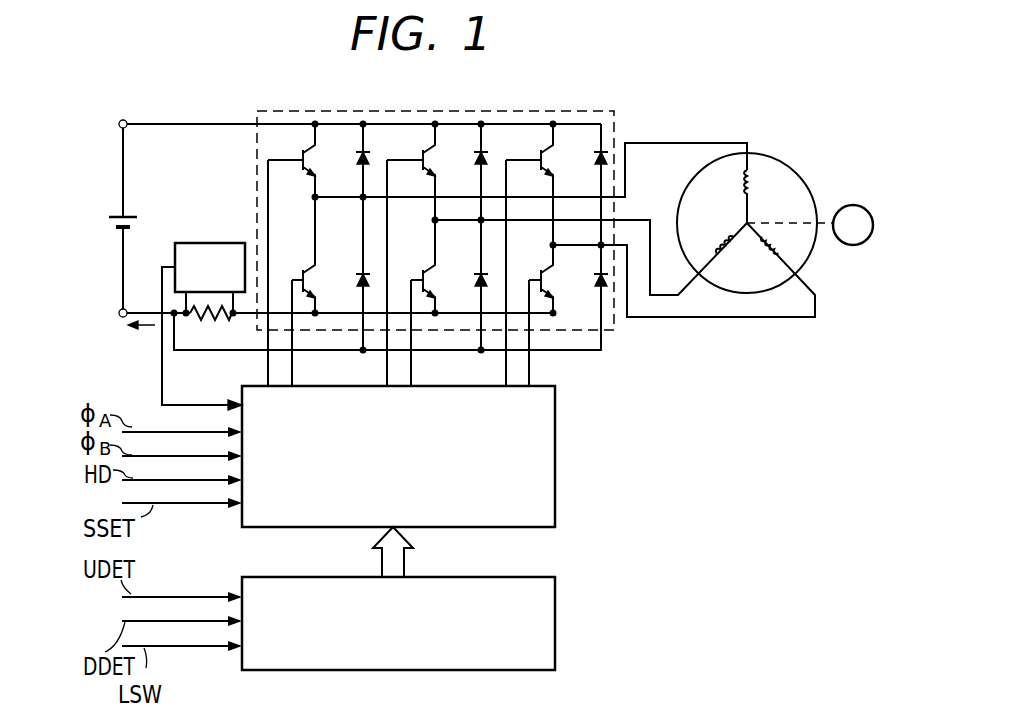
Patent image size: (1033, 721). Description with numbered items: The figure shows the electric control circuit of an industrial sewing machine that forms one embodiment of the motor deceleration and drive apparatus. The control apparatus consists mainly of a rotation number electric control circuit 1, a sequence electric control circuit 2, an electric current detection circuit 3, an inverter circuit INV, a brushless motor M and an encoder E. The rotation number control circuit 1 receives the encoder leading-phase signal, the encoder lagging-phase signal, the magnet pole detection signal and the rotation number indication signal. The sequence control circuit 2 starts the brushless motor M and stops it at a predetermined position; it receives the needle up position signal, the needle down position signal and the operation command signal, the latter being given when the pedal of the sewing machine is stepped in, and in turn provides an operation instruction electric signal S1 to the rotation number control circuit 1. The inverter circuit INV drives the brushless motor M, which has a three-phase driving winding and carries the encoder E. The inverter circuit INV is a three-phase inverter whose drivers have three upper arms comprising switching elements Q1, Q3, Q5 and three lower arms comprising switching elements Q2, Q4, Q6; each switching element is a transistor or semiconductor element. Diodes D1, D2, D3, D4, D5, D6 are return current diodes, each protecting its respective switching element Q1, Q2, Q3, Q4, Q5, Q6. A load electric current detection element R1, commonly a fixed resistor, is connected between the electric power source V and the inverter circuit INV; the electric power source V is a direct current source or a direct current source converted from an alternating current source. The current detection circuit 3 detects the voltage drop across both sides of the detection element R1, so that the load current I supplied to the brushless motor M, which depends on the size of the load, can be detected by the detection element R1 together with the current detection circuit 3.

The rotation number electric control circuit 1 is at (556, 437).
The sequence electric control circuit 2 is at (556, 617).
The electric current detection circuit 3 is at (207, 243).
The load electric current detection element R1 is at (214, 320).
The operation instruction electric signal S1 is at (406, 564).
The switching element Q1 is at (291, 160).
The switching element Q2 is at (296, 255).
The switching element Q3 is at (411, 172).
The switching element Q4 is at (415, 266).
The switching element Q5 is at (529, 184).
The switching element Q6 is at (535, 279).
The diode D1 is at (350, 160).
The diode D2 is at (350, 273).
The diode D3 is at (469, 172).
The diode D4 is at (468, 285).
The diode D5 is at (589, 184).
The diode D6 is at (587, 297).
The inverter circuit INV is at (532, 112).
The brushless motor M is at (774, 159).
The encoder E is at (848, 206).
The electric power source V is at (116, 218).
The load current I is at (148, 349).